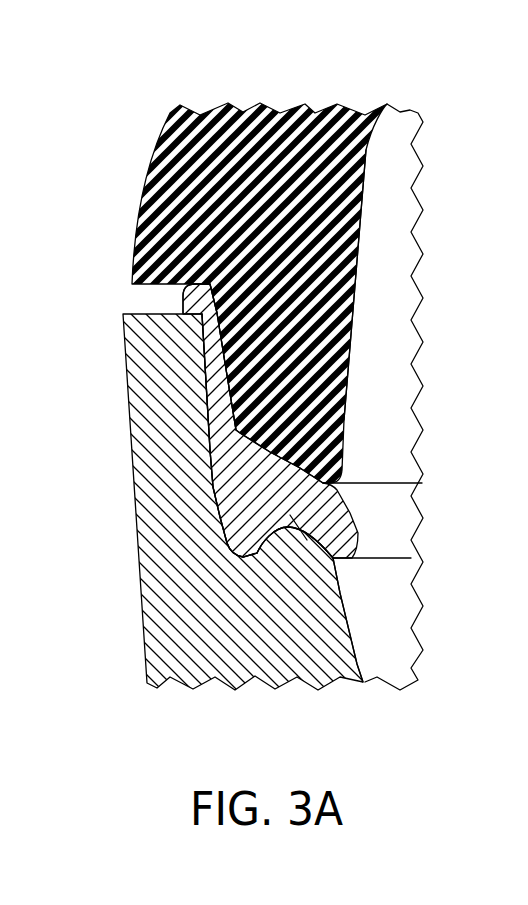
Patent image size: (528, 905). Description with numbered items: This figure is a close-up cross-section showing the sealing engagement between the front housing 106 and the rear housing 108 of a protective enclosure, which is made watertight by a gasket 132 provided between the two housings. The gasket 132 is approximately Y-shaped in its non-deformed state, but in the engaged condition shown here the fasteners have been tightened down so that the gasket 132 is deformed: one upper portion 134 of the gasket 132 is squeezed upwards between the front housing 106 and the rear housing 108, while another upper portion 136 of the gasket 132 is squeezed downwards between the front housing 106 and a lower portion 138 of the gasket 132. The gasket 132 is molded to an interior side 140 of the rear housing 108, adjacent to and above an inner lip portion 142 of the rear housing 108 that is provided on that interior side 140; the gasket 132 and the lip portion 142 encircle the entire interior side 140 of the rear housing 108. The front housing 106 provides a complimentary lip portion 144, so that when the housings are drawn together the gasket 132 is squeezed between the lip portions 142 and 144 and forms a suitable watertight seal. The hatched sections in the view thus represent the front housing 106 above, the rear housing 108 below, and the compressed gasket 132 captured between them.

The front housing 106 is at (143, 178).
The rear housing 108 is at (139, 609).
The gasket 132 is at (215, 448).
The upper portion 134 is at (207, 363).
The upper portion 136 is at (353, 523).
The lower portion 138 is at (225, 487).
The interior side 140 is at (360, 664).
The inner lip portion 142 is at (340, 593).
The complimentary lip portion 144 is at (350, 345).